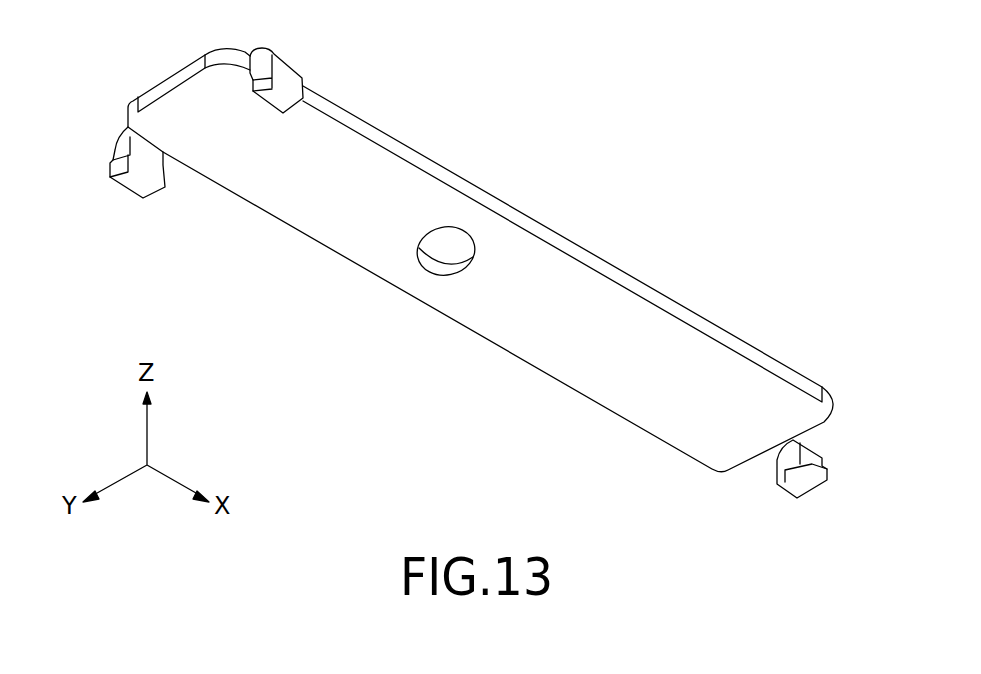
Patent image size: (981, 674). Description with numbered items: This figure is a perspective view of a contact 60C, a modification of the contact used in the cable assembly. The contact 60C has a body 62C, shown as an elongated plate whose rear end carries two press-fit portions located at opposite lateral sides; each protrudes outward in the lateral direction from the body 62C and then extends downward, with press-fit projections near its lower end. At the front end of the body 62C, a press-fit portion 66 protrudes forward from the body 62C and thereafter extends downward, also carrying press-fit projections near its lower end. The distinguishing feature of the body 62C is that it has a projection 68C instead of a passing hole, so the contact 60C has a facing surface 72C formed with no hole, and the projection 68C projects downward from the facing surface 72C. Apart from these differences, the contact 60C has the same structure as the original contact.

The contact 60C is at (480, 242).
The body 62C is at (480, 260).
The press-fit portion 66 is at (818, 450).
The projection 68C is at (435, 258).
The facing surface 72C is at (512, 332).